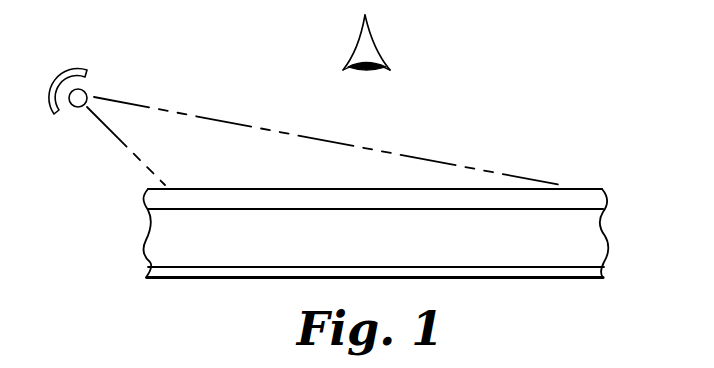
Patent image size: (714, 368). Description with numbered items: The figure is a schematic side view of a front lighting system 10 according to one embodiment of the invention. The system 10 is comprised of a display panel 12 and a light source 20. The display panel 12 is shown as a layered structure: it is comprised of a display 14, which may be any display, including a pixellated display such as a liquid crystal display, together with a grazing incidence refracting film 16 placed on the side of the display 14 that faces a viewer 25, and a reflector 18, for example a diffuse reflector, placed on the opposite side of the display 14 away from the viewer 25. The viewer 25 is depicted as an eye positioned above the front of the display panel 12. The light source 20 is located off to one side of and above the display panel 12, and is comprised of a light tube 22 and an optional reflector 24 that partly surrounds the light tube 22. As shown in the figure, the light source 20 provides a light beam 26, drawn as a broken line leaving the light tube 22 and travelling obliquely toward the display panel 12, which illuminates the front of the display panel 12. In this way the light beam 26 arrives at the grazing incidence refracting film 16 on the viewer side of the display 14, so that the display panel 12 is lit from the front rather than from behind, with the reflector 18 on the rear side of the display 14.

The system 10 is at (466, 75).
The display panel 12 is at (580, 172).
The display 14 is at (587, 242).
The grazing incidence refracting film 16 is at (589, 202).
The reflector 18 is at (577, 269).
The light source 20 is at (94, 46).
The light tube 22 is at (74, 108).
The reflector 24 is at (65, 69).
The viewer 25 is at (373, 33).
The light beam 26 is at (244, 126).